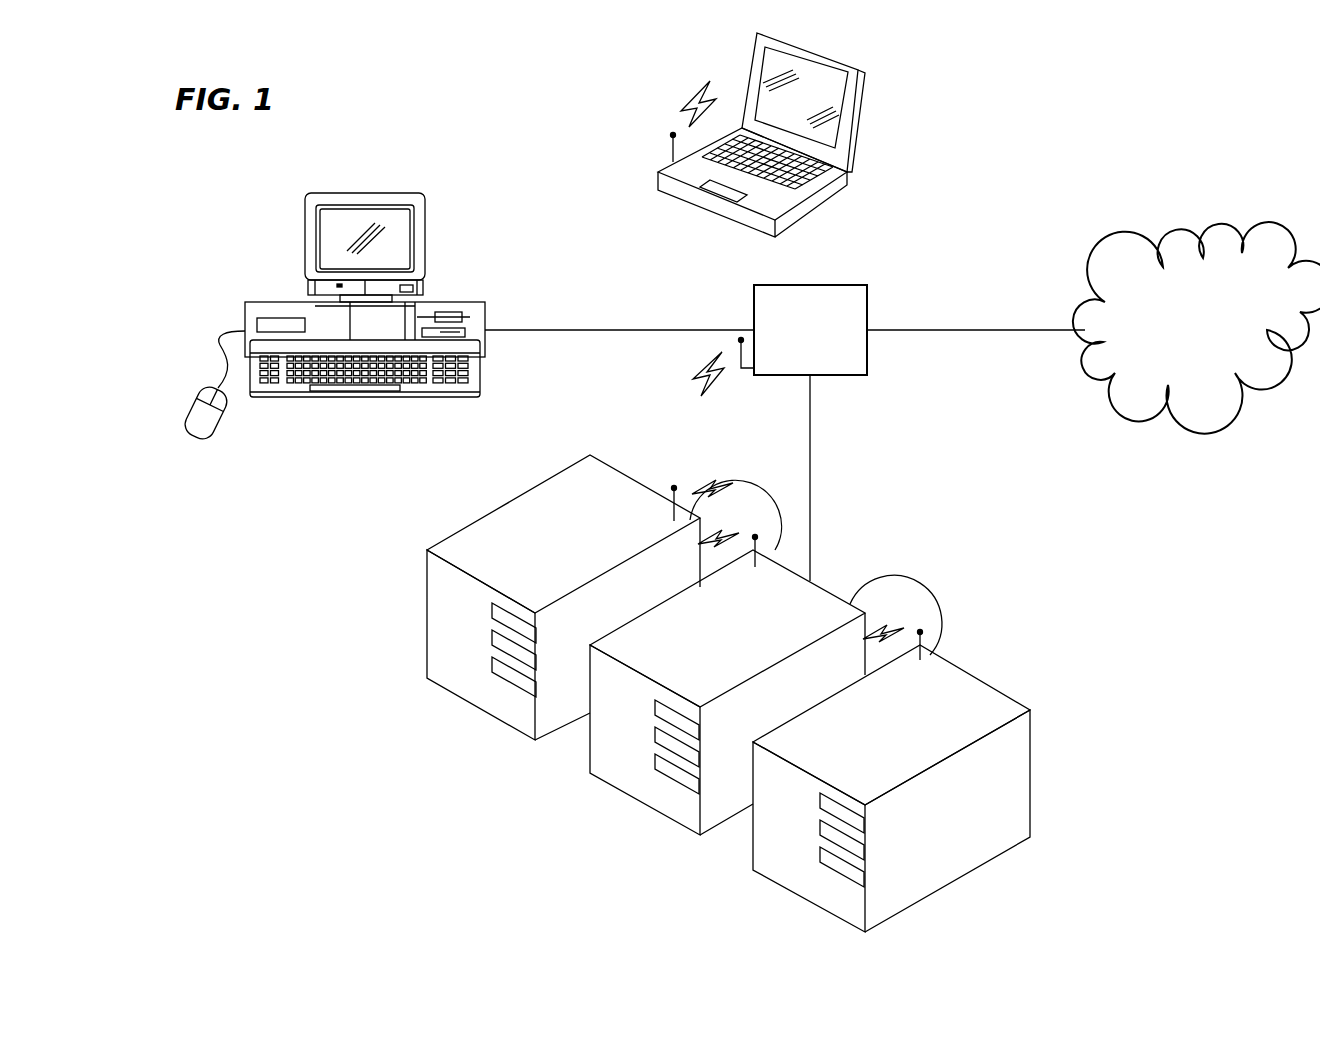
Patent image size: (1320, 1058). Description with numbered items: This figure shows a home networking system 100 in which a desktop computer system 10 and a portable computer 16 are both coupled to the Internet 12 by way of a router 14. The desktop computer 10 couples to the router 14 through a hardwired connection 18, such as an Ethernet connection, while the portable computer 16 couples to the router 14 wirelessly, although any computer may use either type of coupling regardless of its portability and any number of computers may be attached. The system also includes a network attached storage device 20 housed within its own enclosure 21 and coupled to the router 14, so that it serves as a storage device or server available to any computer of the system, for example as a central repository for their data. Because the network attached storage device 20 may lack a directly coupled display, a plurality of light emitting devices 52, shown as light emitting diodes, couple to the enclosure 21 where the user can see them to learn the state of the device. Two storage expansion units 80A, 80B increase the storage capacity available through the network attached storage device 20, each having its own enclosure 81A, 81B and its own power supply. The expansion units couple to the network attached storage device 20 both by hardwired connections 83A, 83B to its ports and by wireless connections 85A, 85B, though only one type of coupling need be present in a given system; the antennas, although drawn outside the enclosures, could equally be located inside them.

The network storage system 100 is at (1135, 87).
The desktop computer 10 is at (488, 267).
The laptop computer 16 is at (823, 217).
The network cable connection 18 is at (515, 328).
The router 14 is at (798, 357).
The internet 12 is at (1185, 357).
The network attached storage (NAS) device 20 is at (708, 687).
The NAS housing 21 is at (633, 800).
The NAS ventilation slots 52 is at (640, 730).
The storage expansion unit 80A is at (563, 576).
The storage expansion unit 80B is at (891, 777).
The storage expansion housing face 81A is at (434, 603).
The storage expansion housing face 81B is at (760, 800).
The wireless connection 83A is at (737, 498).
The wireless connection 83B is at (932, 604).
The antenna 85A is at (683, 472).
The antenna 85B is at (942, 640).